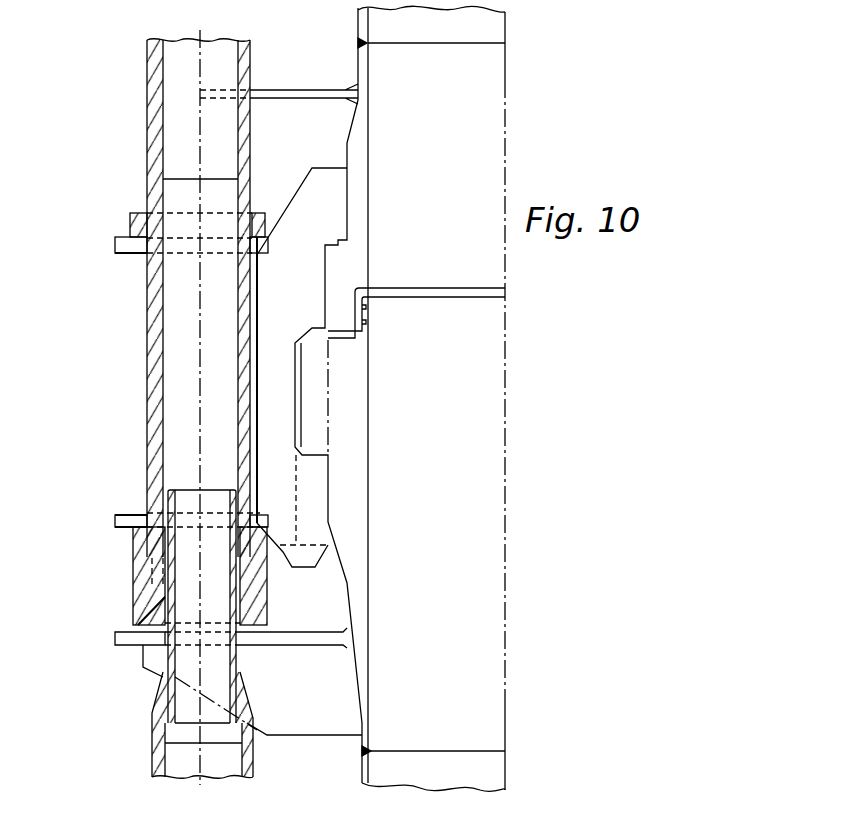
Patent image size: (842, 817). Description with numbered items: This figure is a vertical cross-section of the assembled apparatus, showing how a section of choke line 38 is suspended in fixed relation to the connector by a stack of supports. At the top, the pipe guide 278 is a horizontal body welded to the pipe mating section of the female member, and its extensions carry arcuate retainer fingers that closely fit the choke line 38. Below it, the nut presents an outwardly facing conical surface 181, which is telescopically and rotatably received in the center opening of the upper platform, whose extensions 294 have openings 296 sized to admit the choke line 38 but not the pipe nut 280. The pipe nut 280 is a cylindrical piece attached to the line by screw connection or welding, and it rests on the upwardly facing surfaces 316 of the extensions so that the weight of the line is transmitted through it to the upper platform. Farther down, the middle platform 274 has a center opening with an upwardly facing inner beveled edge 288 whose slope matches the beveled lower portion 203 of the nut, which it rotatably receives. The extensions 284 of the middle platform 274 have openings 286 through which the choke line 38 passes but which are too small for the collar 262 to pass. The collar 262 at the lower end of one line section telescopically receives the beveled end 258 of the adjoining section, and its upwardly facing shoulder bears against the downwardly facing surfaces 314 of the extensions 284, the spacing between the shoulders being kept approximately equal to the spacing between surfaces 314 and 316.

The choke line 38 is at (147, 84).
The pipe guide 278 is at (322, 64).
The outwardly facing conical surface 181 is at (294, 196).
The openings 296 is at (238, 255).
The pipe nut 280 is at (129, 213).
The upwardly facing surfaces 316 is at (115, 243).
The extensions 294 is at (127, 258).
The beveled end 258 is at (184, 489).
The openings 286 is at (165, 520).
The middle platform 274 is at (113, 511).
The extensions 284 is at (128, 513).
The downwardly facing surfaces 314 is at (127, 529).
The collar 262 is at (134, 591).
The inner beveled edge 288 is at (262, 530).
The beveled lower portion 203 is at (278, 548).